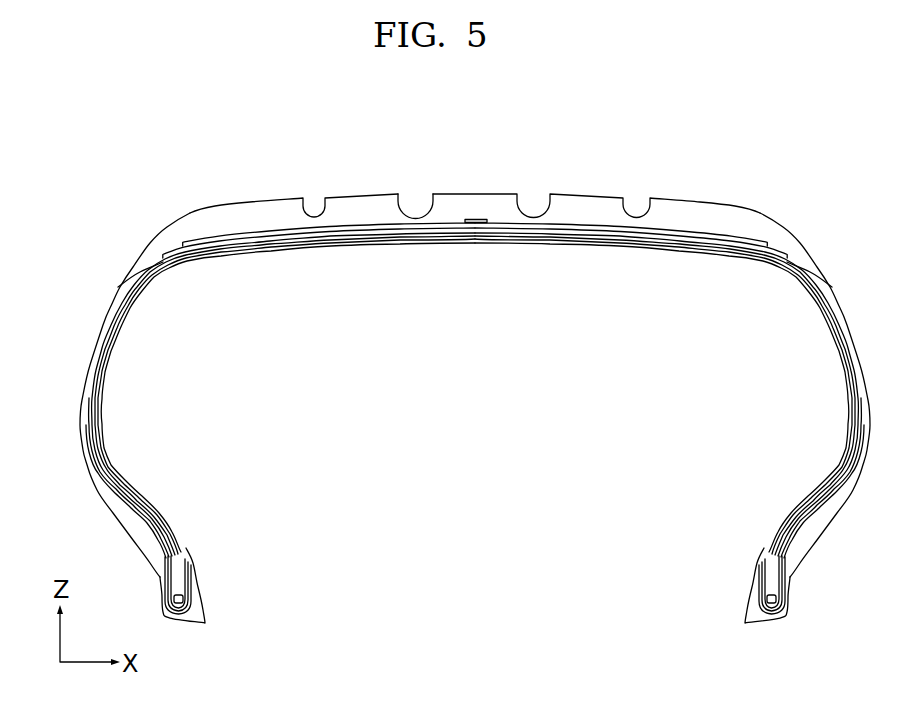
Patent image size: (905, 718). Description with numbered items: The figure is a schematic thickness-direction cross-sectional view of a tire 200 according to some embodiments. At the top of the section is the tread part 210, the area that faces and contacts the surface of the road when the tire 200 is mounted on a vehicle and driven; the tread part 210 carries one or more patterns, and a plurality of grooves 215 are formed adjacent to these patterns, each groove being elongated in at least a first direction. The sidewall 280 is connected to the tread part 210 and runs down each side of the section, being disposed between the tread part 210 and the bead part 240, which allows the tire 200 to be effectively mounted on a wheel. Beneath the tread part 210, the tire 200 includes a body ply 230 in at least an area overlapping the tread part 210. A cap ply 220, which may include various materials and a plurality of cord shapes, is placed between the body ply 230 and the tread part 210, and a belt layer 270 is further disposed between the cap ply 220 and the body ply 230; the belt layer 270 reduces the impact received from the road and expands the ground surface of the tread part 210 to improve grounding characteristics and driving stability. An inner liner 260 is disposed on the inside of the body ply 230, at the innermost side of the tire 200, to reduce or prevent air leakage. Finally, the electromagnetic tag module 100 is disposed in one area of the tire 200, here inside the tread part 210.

The electromagnetic tag module 100 is at (480, 218).
The tire 200 is at (729, 147).
The tread part 210 is at (360, 192).
The grooves 215 is at (418, 208).
The cap ply 220 is at (247, 233).
The body ply 230 is at (107, 327).
The bead part 240 is at (178, 572).
The inner liner 260 is at (170, 537).
The belt layer 270 is at (587, 230).
The sidewall 280 is at (88, 473).